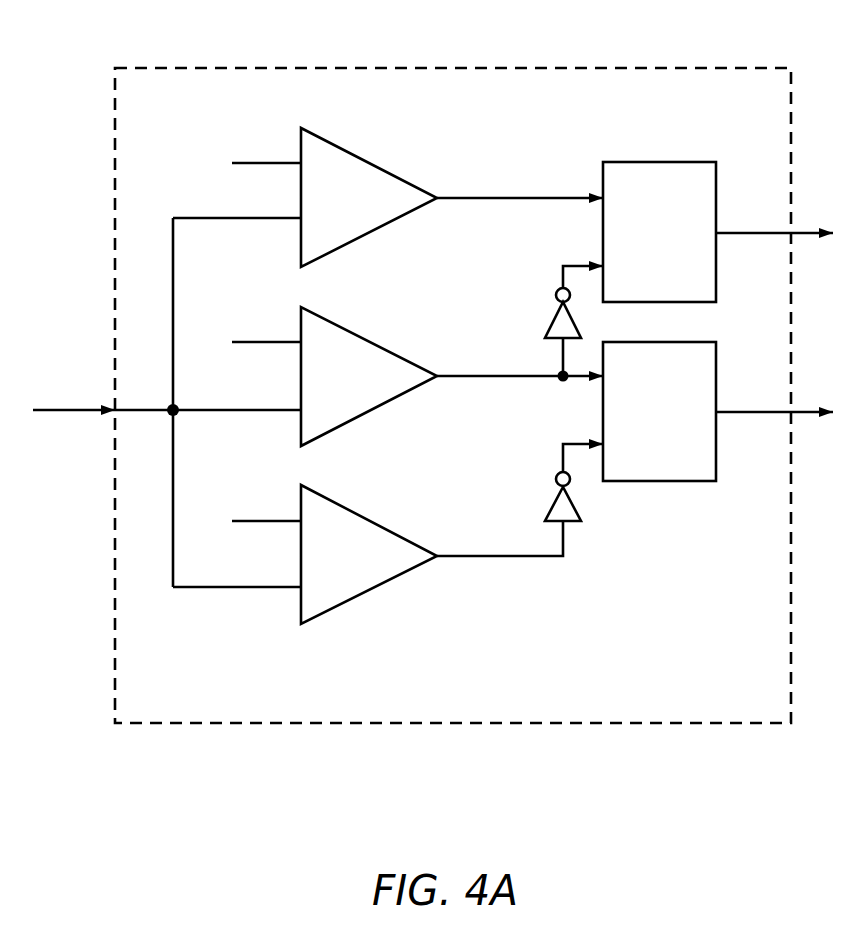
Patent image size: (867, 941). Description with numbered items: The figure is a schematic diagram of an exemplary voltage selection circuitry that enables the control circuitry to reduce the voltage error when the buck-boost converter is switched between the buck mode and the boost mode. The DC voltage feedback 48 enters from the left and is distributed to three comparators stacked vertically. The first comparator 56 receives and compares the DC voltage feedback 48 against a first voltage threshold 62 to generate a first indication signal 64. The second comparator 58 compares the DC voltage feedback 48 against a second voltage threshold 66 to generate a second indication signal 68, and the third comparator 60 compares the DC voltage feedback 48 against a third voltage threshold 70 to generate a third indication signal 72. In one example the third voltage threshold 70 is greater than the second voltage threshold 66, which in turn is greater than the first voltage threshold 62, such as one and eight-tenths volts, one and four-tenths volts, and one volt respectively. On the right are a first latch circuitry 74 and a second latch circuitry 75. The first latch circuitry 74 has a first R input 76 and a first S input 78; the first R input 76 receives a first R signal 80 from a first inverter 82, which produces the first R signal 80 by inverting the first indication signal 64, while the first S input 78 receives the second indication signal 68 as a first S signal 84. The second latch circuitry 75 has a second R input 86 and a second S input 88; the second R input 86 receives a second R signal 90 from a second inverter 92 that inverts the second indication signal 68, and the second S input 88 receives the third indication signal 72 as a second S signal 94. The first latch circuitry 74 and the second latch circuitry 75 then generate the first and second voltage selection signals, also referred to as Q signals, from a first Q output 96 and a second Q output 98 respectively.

The DC voltage feedback 48 is at (62, 407).
The third voltage threshold 70 is at (257, 160).
The second voltage threshold 66 is at (258, 339).
The first voltage threshold 62 is at (258, 518).
The third comparator 60 is at (368, 162).
The second comparator 58 is at (366, 340).
The first comparator 56 is at (366, 520).
The third indication signal 72 is at (493, 194).
The second S signal 94 is at (566, 194).
The second indication signal 68 is at (487, 371).
The first S signal 84 is at (575, 374).
The first indication signal 64 is at (490, 551).
The first inverter 82 is at (550, 502).
The first R signal 80 is at (576, 440).
The second inverter 92 is at (552, 325).
The second R signal 90 is at (571, 262).
The second latch circuitry 75 is at (673, 162).
The second S input 88 is at (629, 197).
The second R input 86 is at (632, 266).
The second Q output 98 is at (701, 245).
The first latch circuitry 74 is at (687, 481).
The first S input 78 is at (629, 376).
The first R input 76 is at (628, 446).
The first Q output 96 is at (701, 424).